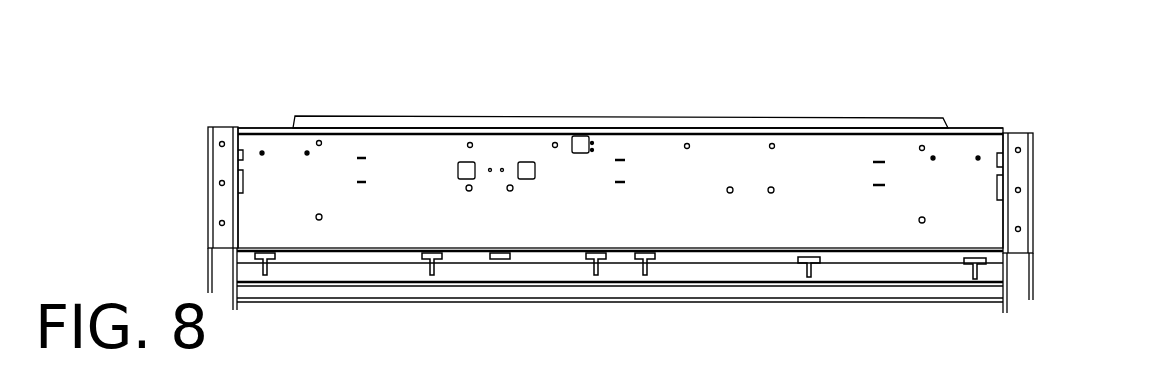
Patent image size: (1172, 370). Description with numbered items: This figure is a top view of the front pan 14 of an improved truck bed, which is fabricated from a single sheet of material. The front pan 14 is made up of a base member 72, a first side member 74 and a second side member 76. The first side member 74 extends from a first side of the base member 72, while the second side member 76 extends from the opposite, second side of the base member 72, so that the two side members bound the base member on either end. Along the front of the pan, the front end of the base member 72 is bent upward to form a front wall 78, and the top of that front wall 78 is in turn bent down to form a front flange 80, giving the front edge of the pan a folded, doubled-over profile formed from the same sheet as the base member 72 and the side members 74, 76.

The front pan 14 is at (880, 98).
The base member 72 is at (618, 219).
The first side member 74 is at (197, 205).
The second side member 76 is at (1038, 212).
The front wall 78 is at (252, 127).
The front flange 80 is at (592, 118).